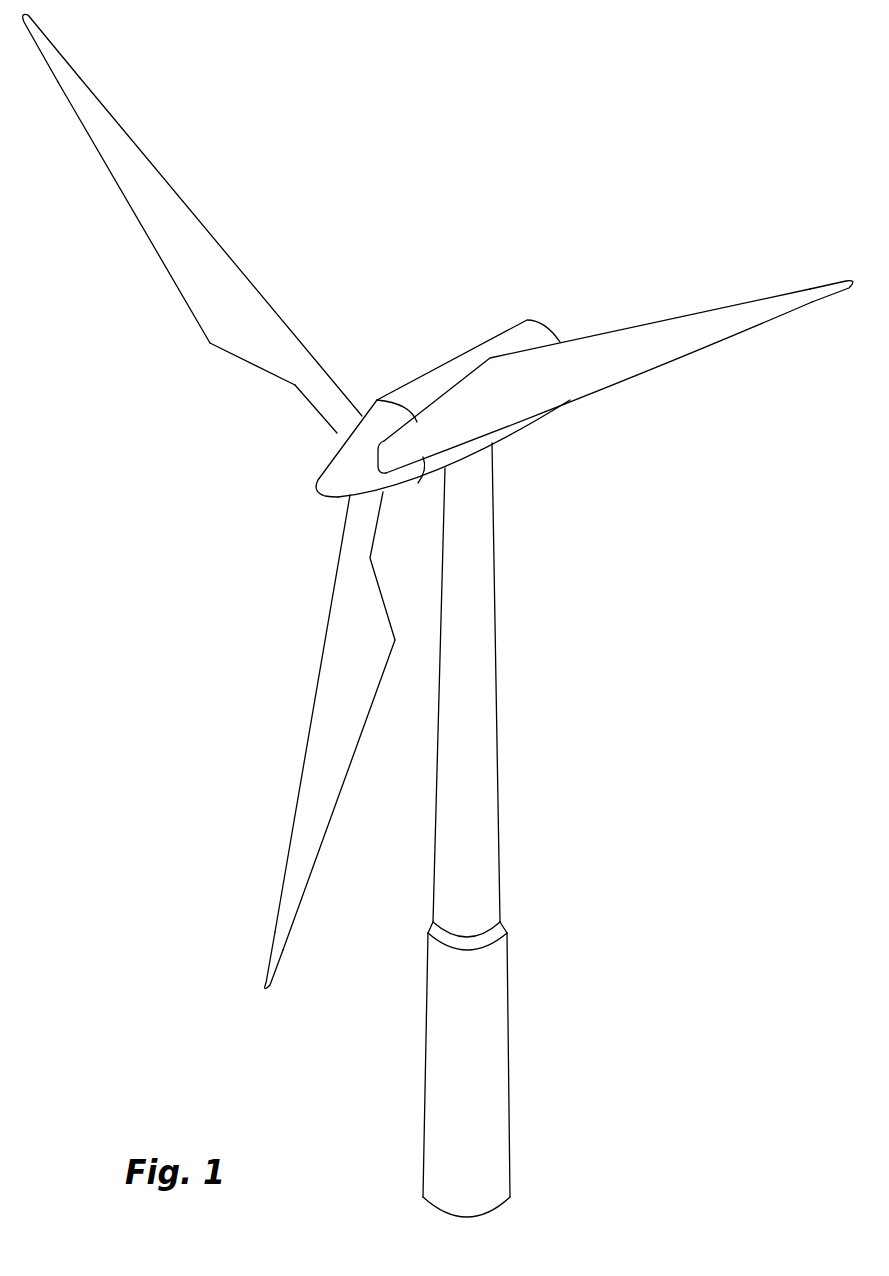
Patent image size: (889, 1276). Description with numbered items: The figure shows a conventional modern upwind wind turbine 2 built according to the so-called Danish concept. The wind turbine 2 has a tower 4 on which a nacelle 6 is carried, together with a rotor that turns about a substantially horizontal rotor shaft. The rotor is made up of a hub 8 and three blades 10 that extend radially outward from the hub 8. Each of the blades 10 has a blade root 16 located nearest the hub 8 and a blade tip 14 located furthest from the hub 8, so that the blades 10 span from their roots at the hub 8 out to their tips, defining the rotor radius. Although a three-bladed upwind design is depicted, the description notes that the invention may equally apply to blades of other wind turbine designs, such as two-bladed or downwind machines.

The wind turbine 2 is at (438, 615).
The tower 4 is at (487, 685).
The nacelle 6 is at (432, 383).
The hub 8 is at (337, 470).
The blades 10 is at (223, 318).
The blade tip 14 is at (72, 70).
The blade root 16 is at (330, 435).